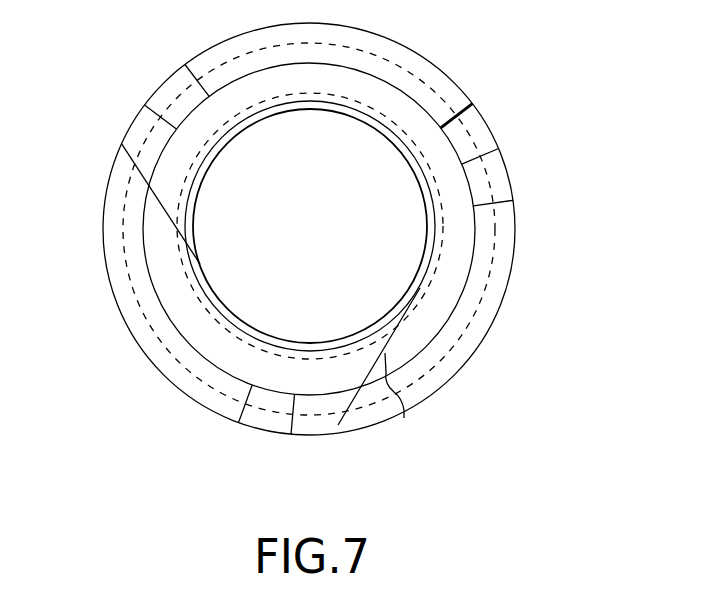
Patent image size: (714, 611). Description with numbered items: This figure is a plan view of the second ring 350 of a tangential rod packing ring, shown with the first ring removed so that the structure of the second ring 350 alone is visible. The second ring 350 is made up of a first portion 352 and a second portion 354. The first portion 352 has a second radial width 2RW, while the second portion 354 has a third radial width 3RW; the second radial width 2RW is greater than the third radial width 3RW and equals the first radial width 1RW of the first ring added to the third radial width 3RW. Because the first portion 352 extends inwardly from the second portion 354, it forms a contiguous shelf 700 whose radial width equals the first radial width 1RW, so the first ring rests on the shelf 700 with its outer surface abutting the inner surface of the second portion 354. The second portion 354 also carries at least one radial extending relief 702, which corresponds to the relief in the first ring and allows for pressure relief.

The second ring 350 is at (200, 462).
The first portion 352 is at (338, 107).
The second portion 354 is at (338, 425).
The shelf 700 is at (404, 418).
The radial extending relief 702 is at (482, 168).
The first radial width 1RW is at (177, 313).
The second radial width 2RW is at (424, 289).
The third radial width 3RW is at (419, 357).